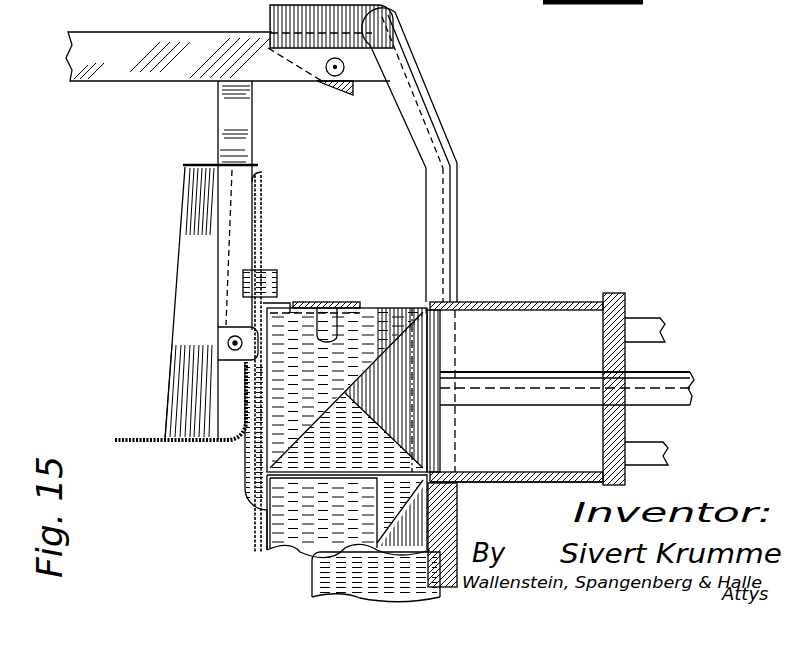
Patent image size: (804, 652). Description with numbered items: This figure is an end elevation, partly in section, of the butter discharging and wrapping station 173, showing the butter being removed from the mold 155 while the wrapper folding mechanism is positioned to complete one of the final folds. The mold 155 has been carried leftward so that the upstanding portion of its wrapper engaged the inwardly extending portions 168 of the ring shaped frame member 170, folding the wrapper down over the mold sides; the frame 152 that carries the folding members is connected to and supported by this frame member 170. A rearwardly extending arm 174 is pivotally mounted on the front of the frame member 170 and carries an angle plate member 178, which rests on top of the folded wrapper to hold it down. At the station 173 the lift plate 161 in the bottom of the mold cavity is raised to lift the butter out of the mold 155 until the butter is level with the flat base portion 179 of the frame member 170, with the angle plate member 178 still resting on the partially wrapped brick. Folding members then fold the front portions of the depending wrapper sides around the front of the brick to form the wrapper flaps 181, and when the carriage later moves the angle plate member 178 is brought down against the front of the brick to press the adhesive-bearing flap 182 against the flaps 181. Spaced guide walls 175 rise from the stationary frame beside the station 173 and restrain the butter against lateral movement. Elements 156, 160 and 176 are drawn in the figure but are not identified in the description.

The frame 152 is at (74, 52).
The mold 155 is at (580, 284).
The cylinder 156 is at (512, 302).
The plate 160 is at (343, 301).
The lift plate 161 is at (433, 417).
The inwardly extending portions 168 is at (420, 96).
The ring shaped frame member 170 is at (467, 202).
The butter discharging and wrapping station 173 is at (476, 489).
The rearwardly extending arm 174 is at (220, 114).
The guide walls 175 is at (543, 4).
The support 176 is at (417, 527).
The angle plate member 178 is at (150, 452).
The flat base portion 179 is at (445, 503).
The wrapper flaps 181 is at (288, 296).
The flap 182 is at (268, 230).